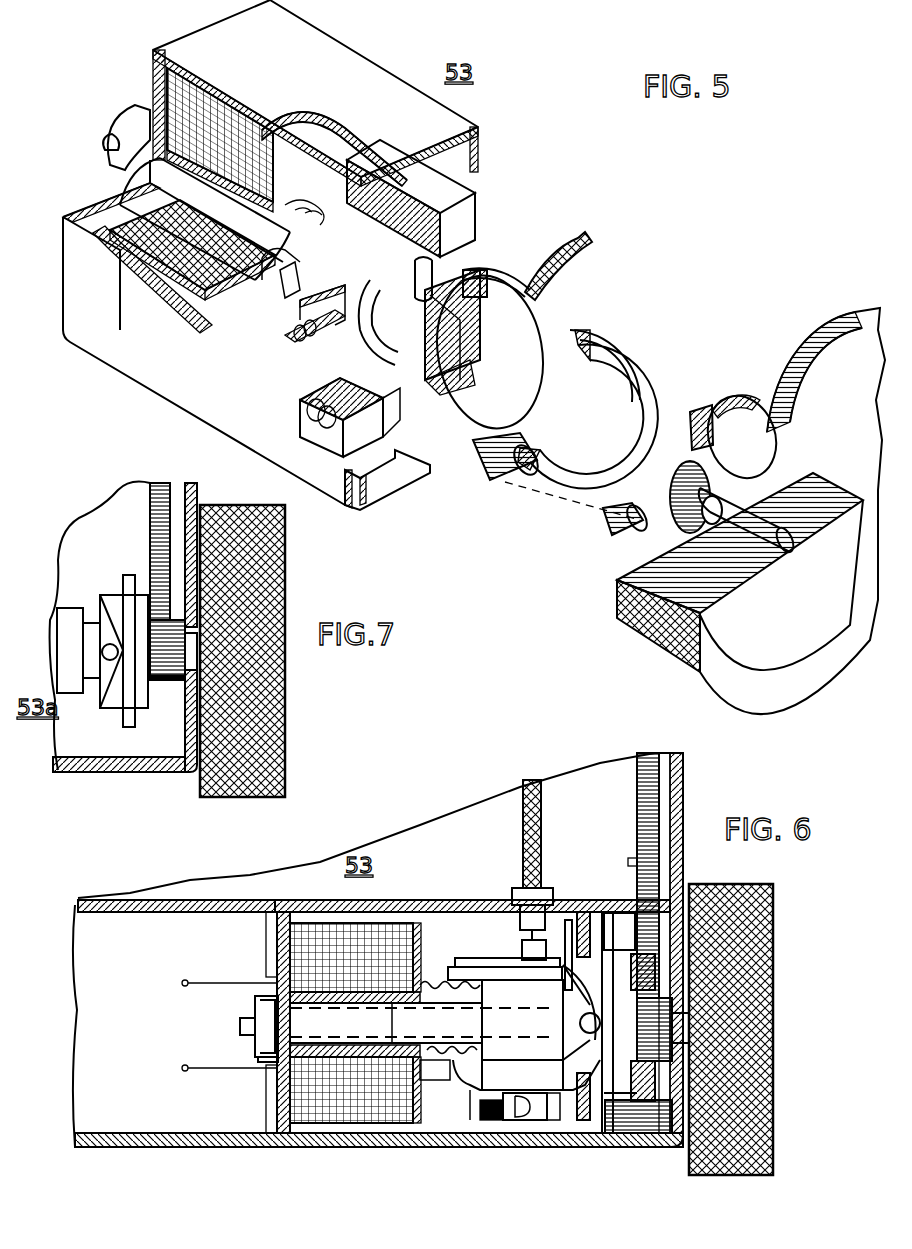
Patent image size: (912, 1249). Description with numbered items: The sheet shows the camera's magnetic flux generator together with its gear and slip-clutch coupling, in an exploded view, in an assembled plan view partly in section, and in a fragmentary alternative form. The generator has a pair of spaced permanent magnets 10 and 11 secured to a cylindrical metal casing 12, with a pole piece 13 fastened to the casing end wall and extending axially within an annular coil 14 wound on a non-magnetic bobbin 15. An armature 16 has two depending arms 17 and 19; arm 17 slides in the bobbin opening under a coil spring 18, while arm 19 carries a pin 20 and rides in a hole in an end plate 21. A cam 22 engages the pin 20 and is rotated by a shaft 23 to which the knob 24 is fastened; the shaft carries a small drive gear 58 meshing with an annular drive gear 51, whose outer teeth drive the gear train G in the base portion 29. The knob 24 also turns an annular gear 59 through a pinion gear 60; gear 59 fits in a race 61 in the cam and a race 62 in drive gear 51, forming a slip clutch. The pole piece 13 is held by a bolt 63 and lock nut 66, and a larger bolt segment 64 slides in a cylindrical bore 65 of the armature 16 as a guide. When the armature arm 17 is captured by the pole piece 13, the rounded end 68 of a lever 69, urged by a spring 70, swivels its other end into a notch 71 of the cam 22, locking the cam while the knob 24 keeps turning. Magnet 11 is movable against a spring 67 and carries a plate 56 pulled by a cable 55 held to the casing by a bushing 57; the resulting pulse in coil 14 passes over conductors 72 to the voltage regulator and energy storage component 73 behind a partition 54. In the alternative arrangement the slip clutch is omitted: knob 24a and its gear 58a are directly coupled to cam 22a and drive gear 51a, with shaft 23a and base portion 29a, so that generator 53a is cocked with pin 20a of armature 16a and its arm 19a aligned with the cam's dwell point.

In FIG. 5, the permanent magnet 10 is at (468, 218).
In FIG. 5, the permanent magnet 11 is at (412, 425).
In FIG. 6, the permanent magnet 11 is at (460, 965).
In FIG. 5, the casing 12 is at (307, 33).
In FIG. 6, the casing 12 is at (407, 883).
In FIG. 5, the pole piece 13 is at (150, 173).
In FIG. 6, the pole piece 13 is at (265, 1063).
In FIG. 5, the coil 14 is at (167, 85).
In FIG. 6, the coil 14 is at (305, 905).
In FIG. 5, the bobbin 15 is at (340, 125).
In FIG. 5, the armature 16 is at (282, 282).
In FIG. 6, the armature 16 is at (520, 1063).
In FIG. 5, the armature arm 17 is at (270, 270).
In FIG. 6, the armature arm 17 is at (440, 1080).
In FIG. 5, the coil spring 18 is at (305, 207).
In FIG. 6, the coil spring 18 is at (458, 1080).
In FIG. 5, the armature arm 19 is at (390, 295).
In FIG. 6, the armature arm 19 is at (572, 1005).
In FIG. 5, the pin 20 is at (437, 285).
In FIG. 6, the pin 20 is at (580, 1030).
In FIG. 6, the end plate 21 is at (570, 918).
In FIG. 5, the cam 22 is at (530, 328).
In FIG. 6, the cam 22 is at (602, 910).
In FIG. 5, the shaft 23 is at (752, 525).
In FIG. 6, the shaft 23 is at (700, 1025).
In FIG. 5, the knob 24 is at (815, 690).
In FIG. 6, the knob 24 is at (760, 922).
In FIG. 6, the base portion 29 is at (683, 780).
In FIG. 5, the drive gear 51 is at (735, 420).
In FIG. 6, the drive gear 51 is at (660, 1122).
In FIG. 6, the partition 54 is at (172, 910).
In FIG. 5, the cable 55 is at (592, 253).
In FIG. 6, the cable 55 is at (541, 805).
In FIG. 6, the plate 56 is at (470, 958).
In FIG. 6, the bushing 57 is at (515, 893).
In FIG. 5, the drive gear 58 is at (690, 468).
In FIG. 6, the drive gear 58 is at (660, 1070).
In FIG. 5, the annular gear 59 is at (625, 343).
In FIG. 6, the annular gear 59 is at (632, 1135).
In FIG. 5, the pinion gear 60 is at (575, 515).
In FIG. 6, the pinion gear 60 is at (652, 1135).
In FIG. 5, the annular race 61 is at (505, 290).
In FIG. 5, the race 62 is at (697, 412).
In FIG. 5, the bolt 63 is at (106, 140).
In FIG. 6, the bolt 63 is at (255, 1000).
In FIG. 6, the bolt segment 64 is at (392, 1043).
In FIG. 6, the cylindrical bore 65 is at (520, 1003).
In FIG. 5, the lock nut 66 is at (140, 125).
In FIG. 6, the lock nut 66 is at (258, 1058).
In FIG. 5, the spring 67 is at (335, 450).
In FIG. 5, the rounded end 68 is at (302, 299).
In FIG. 6, the rounded end 68 is at (463, 1070).
In FIG. 5, the lever 69 is at (392, 400).
In FIG. 6, the lever 69 is at (507, 1120).
In FIG. 5, the spring 70 is at (285, 340).
In FIG. 6, the spring 70 is at (475, 1123).
In FIG. 5, the notch 71 is at (440, 360).
In FIG. 6, the notch 71 is at (605, 1120).
In FIG. 6, the conductors 72 is at (207, 983).
In FIG. 6, the voltage regulator and energy storage component 73 is at (157, 1108).
In FIG. 5, the gear train G is at (845, 318).
In FIG. 6, the gear train G is at (637, 780).
In FIG. 7, the armature 16a is at (72, 680).
In FIG. 7, the armature arm 19a is at (97, 620).
In FIG. 7, the pin 20a is at (102, 652).
In FIG. 7, the cam 22a is at (117, 590).
In FIG. 7, the shaft 23a is at (197, 650).
In FIG. 7, the control knob 24a is at (270, 548).
In FIG. 7, the base portion 29a is at (115, 772).
In FIG. 7, the drive gear 51a is at (150, 528).
In FIG. 7, the electric generator 53a is at (100, 626).
In FIG. 7, the gear 58a is at (165, 680).